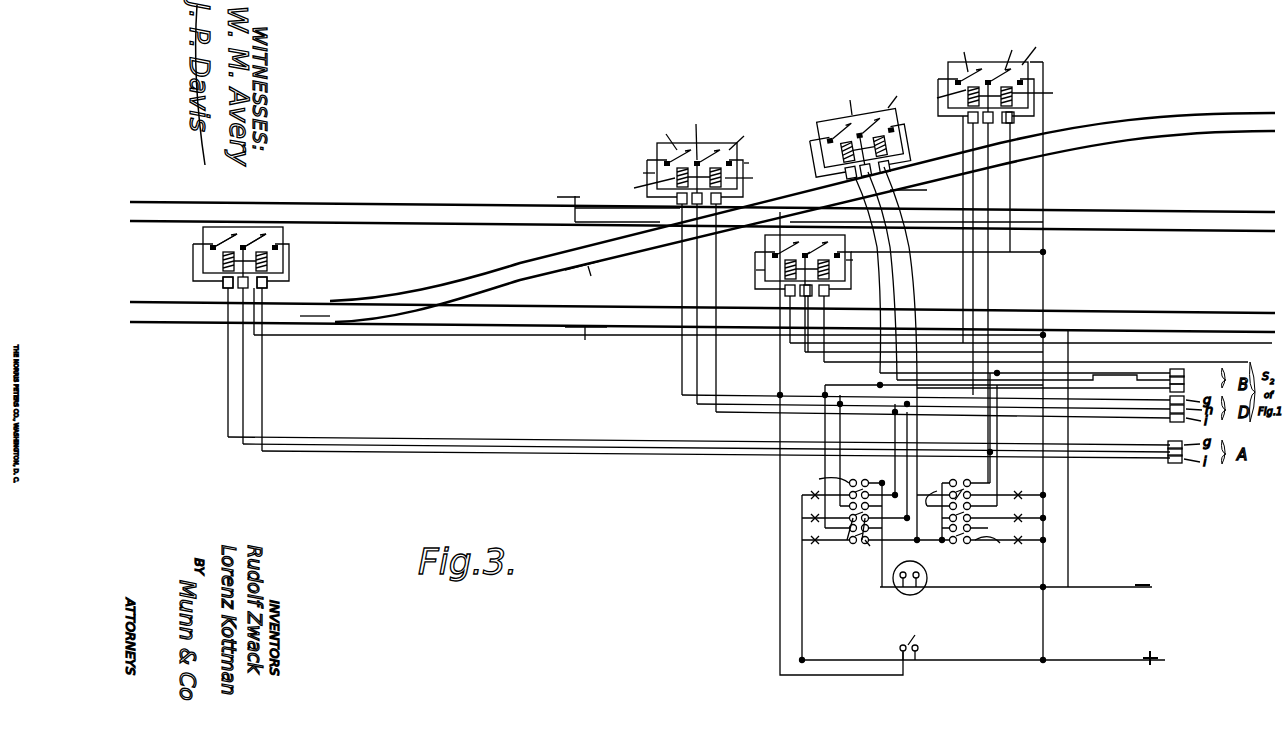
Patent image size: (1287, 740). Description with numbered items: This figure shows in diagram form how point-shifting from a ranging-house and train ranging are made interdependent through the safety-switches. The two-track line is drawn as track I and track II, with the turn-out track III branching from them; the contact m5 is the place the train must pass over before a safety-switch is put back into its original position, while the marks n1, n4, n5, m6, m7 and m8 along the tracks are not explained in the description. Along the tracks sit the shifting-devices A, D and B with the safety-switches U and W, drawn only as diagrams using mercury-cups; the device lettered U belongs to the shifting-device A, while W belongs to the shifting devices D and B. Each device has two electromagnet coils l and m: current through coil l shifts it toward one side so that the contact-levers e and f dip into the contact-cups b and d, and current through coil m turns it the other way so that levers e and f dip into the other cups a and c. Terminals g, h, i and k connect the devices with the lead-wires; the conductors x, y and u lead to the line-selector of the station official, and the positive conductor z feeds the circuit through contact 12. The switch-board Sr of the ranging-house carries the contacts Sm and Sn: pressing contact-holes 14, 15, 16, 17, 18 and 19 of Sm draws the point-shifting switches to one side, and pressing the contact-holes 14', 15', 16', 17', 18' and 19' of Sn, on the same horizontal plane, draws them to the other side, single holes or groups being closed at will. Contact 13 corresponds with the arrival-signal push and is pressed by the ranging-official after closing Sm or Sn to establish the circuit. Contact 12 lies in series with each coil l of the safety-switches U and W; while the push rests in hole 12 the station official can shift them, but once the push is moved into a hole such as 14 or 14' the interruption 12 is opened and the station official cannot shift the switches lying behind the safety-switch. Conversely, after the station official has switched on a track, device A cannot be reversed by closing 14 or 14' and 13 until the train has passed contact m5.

The track I is at (138, 318).
The track II is at (140, 218).
The turn-out track III is at (1275, 132).
The shifting-device A is at (282, 266).
The shifting-device B is at (870, 108).
The shifting-device D is at (711, 147).
The track relay U is at (770, 272).
The safety-switch W is at (980, 60).
The contact-cup a is at (193, 246).
The contact-cup b is at (243, 240).
The contact-cup c is at (243, 240).
The contact-cup d is at (290, 243).
The contact-lever e is at (225, 242).
The contact-lever f is at (262, 242).
The terminal g is at (1186, 373).
The terminal h is at (1184, 452).
The terminal i is at (1186, 388).
The terminal k is at (1186, 380).
The electromagnet-coil l is at (223, 283).
The electromagnet-coil m is at (267, 283).
The rail n1 is at (315, 309).
The rail n4 is at (916, 206).
The rail n5 is at (620, 212).
The contact m5 is at (586, 342).
The insulated joint m6 is at (589, 275).
The insulated joint m7 is at (618, 201).
The insulated joint m8 is at (908, 200).
The conductor x is at (1034, 347).
The conductor y is at (1041, 357).
The conductor u is at (1022, 587).
The positive conductor z is at (990, 659).
The switch-board Sr is at (895, 443).
The contacts Sm is at (857, 501).
The contacts Sn is at (948, 501).
The contact 12 is at (912, 645).
The contact 13 is at (918, 573).
The contact-hole 14 is at (824, 504).
The contact-hole 15 is at (800, 503).
The contact-hole 16 is at (800, 525).
The contact-hole 17 is at (829, 541).
The contact-hole 18 is at (849, 541).
The contact-hole 19 is at (866, 552).
The contact-hole 14' is at (965, 482).
The contact-hole 15' is at (931, 512).
The contact-hole 16' is at (997, 479).
The contact-hole 17' is at (1007, 498).
The contact-hole 18' is at (1002, 521).
The contact-hole 19' is at (987, 551).